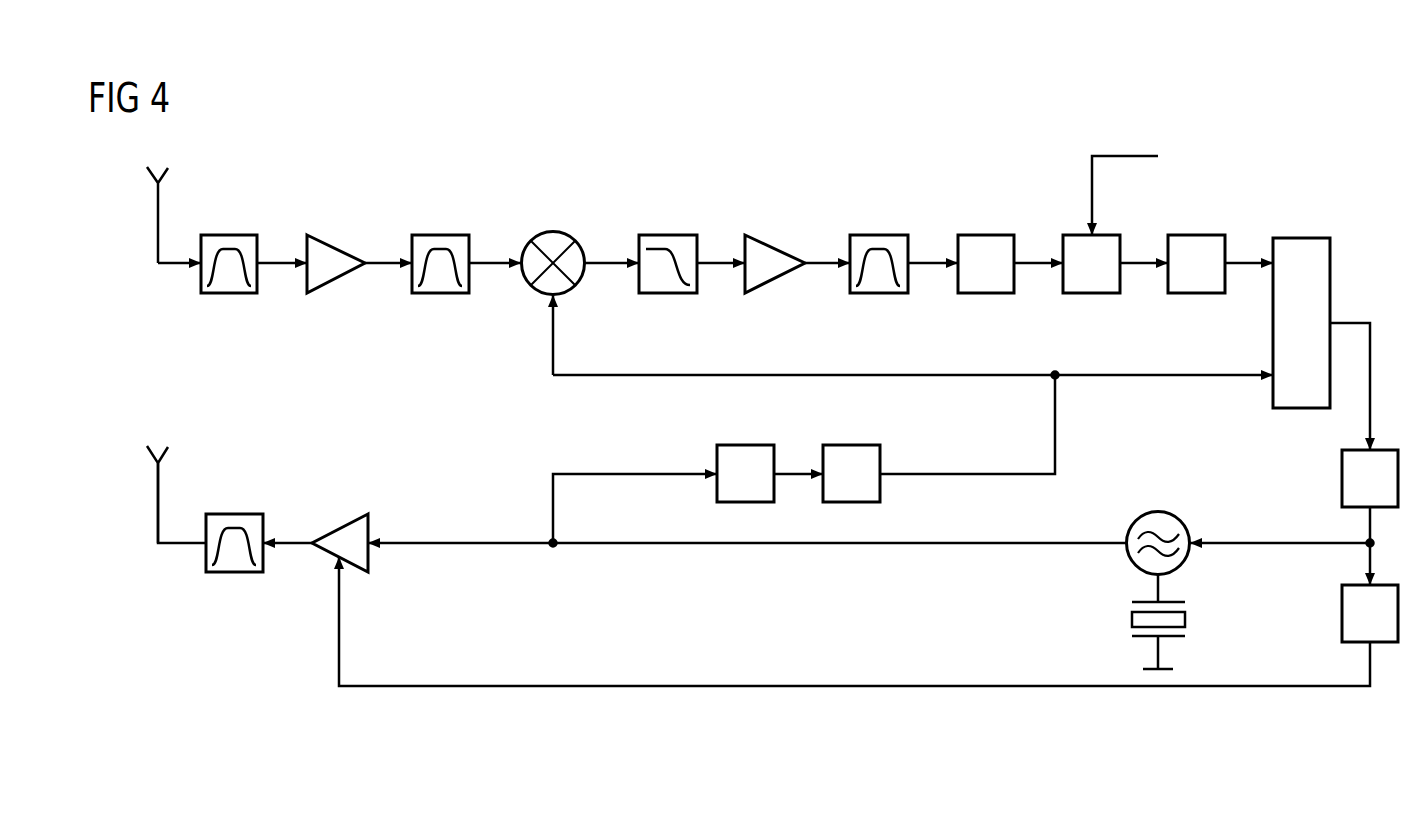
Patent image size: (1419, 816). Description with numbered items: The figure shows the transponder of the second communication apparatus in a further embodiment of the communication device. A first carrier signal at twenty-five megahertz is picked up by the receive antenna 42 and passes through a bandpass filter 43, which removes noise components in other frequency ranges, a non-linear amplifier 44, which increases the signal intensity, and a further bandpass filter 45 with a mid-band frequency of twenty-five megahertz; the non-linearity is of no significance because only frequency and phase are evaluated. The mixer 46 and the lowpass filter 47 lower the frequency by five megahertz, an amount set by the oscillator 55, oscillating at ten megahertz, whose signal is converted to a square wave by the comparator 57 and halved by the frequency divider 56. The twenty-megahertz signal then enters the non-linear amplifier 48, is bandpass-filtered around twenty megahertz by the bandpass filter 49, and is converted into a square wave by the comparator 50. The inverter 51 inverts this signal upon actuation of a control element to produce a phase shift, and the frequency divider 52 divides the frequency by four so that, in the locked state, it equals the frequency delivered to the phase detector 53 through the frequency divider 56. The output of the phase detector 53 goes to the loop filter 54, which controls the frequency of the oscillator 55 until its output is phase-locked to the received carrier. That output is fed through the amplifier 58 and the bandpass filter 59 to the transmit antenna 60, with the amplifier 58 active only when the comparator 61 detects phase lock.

The receive antenna 42 is at (146, 178).
The bandpass filter 43 is at (230, 235).
The non-linear amplifier 44 is at (332, 241).
The further bandpass filter 45 is at (443, 235).
The mixer 46 is at (554, 232).
The lowpass filter 47 is at (666, 235).
The non-linear amplifier 48 is at (770, 241).
The bandpass filter 49 is at (881, 235).
The comparator 50 is at (985, 236).
The inverter 51 is at (1105, 236).
The frequency divider 52 is at (1195, 236).
The phase detector 53 is at (1300, 238).
The loop filter 54 is at (1342, 478).
The oscillator 55 is at (1155, 512).
The frequency divider 56 is at (851, 445).
The comparator 57 is at (743, 445).
The amplifier 58 is at (345, 520).
The bandpass filter 59 is at (236, 514).
The transmit antenna 60 is at (146, 456).
The comparator 61 is at (1342, 613).